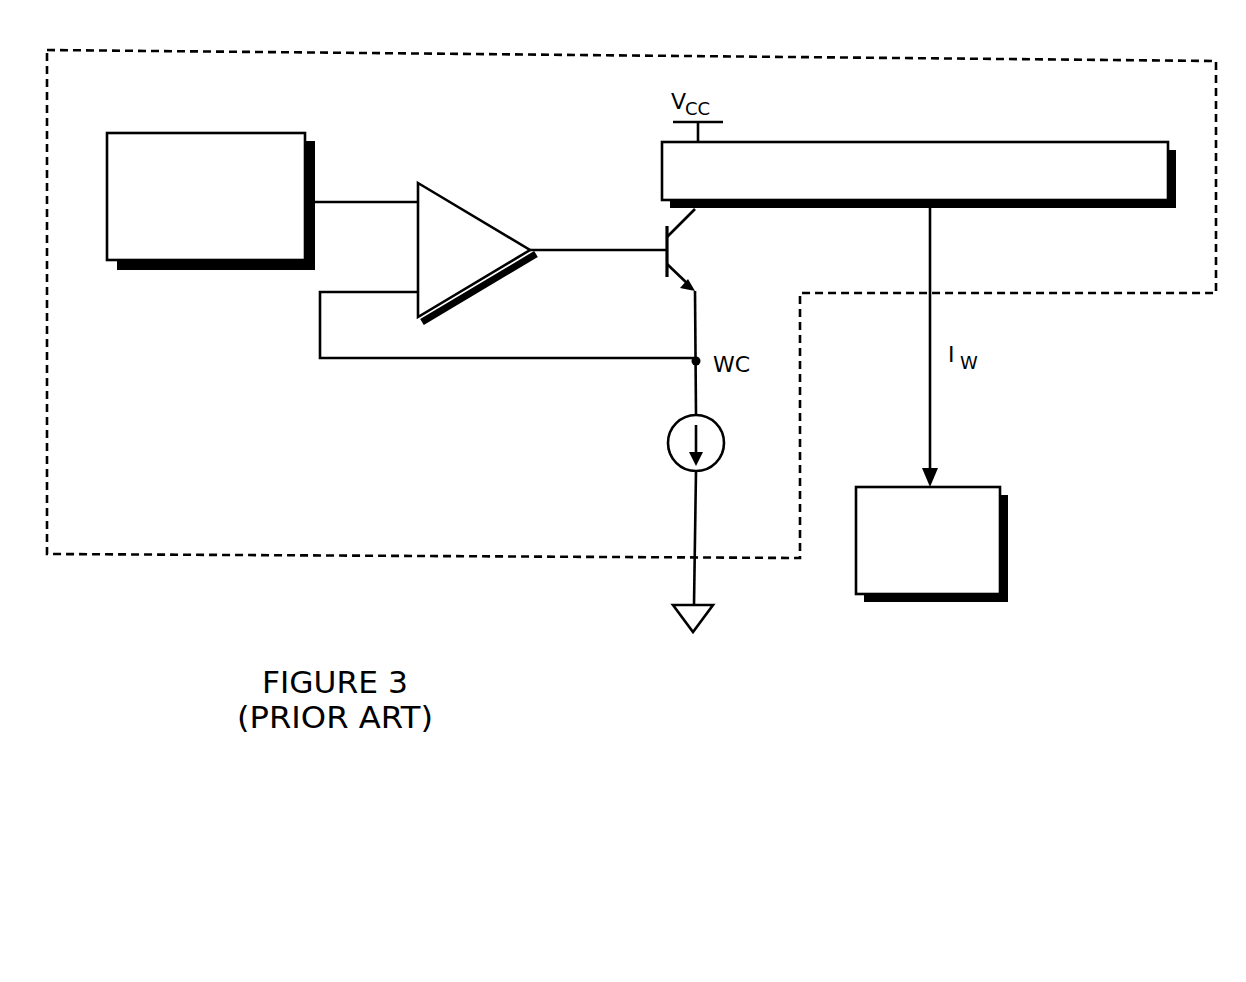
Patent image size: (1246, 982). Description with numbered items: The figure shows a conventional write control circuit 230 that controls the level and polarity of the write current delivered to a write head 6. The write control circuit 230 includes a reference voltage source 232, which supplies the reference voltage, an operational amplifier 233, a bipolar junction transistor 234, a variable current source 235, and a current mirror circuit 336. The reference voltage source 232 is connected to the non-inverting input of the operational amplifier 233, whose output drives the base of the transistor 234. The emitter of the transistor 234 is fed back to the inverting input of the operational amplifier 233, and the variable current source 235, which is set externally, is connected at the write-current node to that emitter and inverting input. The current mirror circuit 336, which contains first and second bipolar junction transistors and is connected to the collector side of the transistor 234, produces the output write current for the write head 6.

The write control circuit 230 is at (520, 55).
The reference voltage source 232 is at (232, 135).
The operational amplifier 233 is at (475, 223).
The bipolar junction transistor 234 is at (662, 263).
The variable current source 235 is at (668, 429).
The current mirror circuit 336 is at (880, 142).
The write head 6 is at (856, 532).